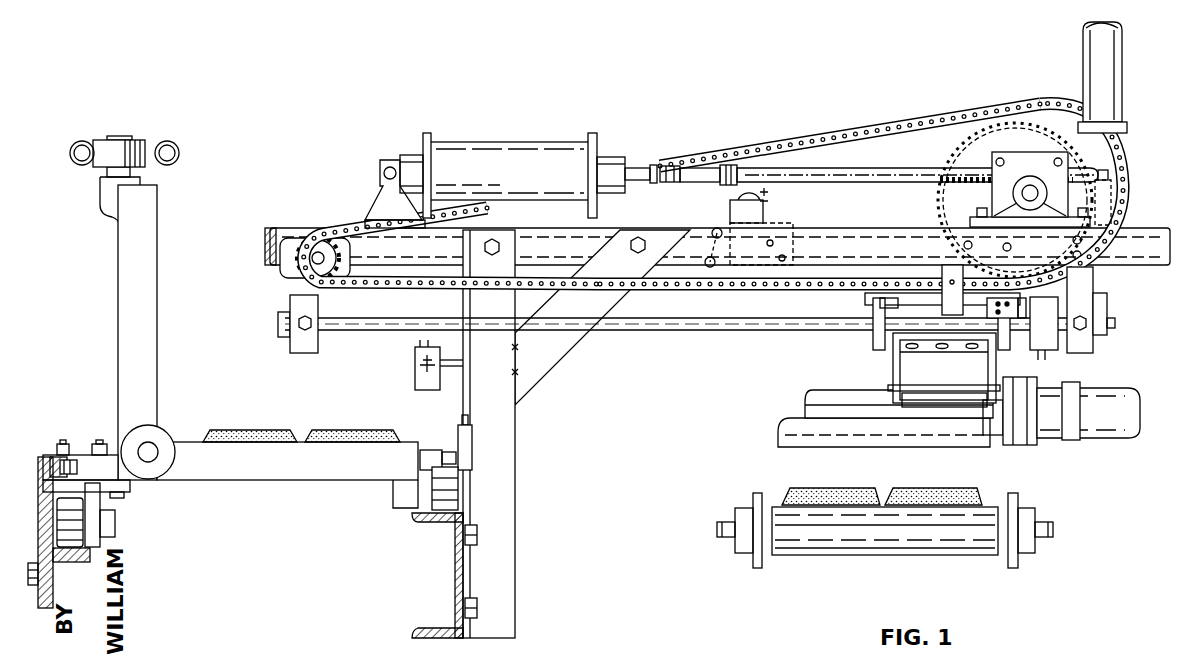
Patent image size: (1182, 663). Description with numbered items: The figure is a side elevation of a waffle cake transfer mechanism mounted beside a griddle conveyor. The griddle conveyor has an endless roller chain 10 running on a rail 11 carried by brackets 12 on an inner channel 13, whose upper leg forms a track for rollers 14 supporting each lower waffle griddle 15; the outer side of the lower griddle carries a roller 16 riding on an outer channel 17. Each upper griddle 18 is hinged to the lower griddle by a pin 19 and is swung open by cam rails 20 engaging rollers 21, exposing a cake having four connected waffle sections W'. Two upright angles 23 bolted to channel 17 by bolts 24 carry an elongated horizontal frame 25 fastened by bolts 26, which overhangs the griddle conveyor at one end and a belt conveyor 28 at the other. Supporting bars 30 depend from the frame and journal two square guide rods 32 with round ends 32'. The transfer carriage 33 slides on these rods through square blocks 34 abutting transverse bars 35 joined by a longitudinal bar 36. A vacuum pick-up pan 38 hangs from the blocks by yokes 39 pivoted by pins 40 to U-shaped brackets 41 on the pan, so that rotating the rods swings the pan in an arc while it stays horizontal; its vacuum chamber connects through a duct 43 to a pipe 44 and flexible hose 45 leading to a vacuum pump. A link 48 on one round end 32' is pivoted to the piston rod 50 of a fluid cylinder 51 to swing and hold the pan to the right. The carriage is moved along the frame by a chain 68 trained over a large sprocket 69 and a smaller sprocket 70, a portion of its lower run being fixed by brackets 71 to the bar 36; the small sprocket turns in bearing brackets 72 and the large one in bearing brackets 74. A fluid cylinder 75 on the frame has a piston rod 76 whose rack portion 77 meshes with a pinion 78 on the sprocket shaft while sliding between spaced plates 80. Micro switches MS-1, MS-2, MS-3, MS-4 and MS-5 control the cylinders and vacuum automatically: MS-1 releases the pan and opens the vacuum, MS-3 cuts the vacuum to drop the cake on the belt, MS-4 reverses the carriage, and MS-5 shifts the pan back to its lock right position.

The endless roller chain 10 is at (57, 452).
The rail 11 is at (50, 462).
The brackets 12 is at (42, 515).
The inner channel 13 is at (49, 576).
The rollers 14 is at (75, 517).
The lower waffle griddle 15 is at (272, 477).
The roller 16 is at (455, 471).
The outer channel 17 is at (455, 555).
The upper griddle 18 is at (118, 299).
The pin 19 is at (150, 450).
The rails 20 is at (76, 141).
The rollers 21 is at (118, 140).
The upright angles 23 is at (505, 582).
The bolts 24 is at (478, 534).
The rectangular frame 25 is at (835, 264).
The bolts 26 is at (492, 255).
The belt conveyor 28 is at (830, 548).
The supporting bars 30 is at (292, 305).
The guide rods 32 is at (692, 341).
The round ends of guide rods 32' is at (1135, 325).
The transfer carriage 33 is at (850, 364).
The square blocks 34 is at (917, 330).
The transverse bars 35 is at (878, 342).
The longitudinal bar 36 is at (917, 298).
The vacuum pick-up pan 38 is at (790, 422).
The yokes 39 is at (893, 367).
The pins 40 is at (942, 387).
The U-shaped brackets 41 is at (902, 402).
The semi-cylindrical duct 43 is at (835, 392).
The pipe 44 is at (1047, 432).
The flexible hose 45 is at (1112, 433).
The link 48 is at (1107, 304).
The piston rod 50 is at (1118, 155).
The fluid cylinder 51 is at (1112, 83).
The chain 68 is at (877, 128).
The large sprocket 69 is at (1032, 117).
The smaller sprocket 70 is at (305, 243).
The brackets 71 is at (880, 300).
The bearing brackets 72 is at (290, 262).
The bearing brackets 74 is at (1003, 210).
The fluid cylinder 75 is at (514, 184).
The piston rod 76 is at (635, 173).
The rack portion 77 is at (893, 173).
The pinion 78 is at (1023, 175).
The spaced plates 80 is at (1030, 160).
The micro switch MS-1 is at (470, 447).
The micro switch MS-2 is at (417, 393).
The micro switch MS-3 is at (952, 317).
The micro switch MS-4 is at (1052, 342).
The micro switch MS-5 is at (752, 218).
The waffle sections W' is at (592, 447).